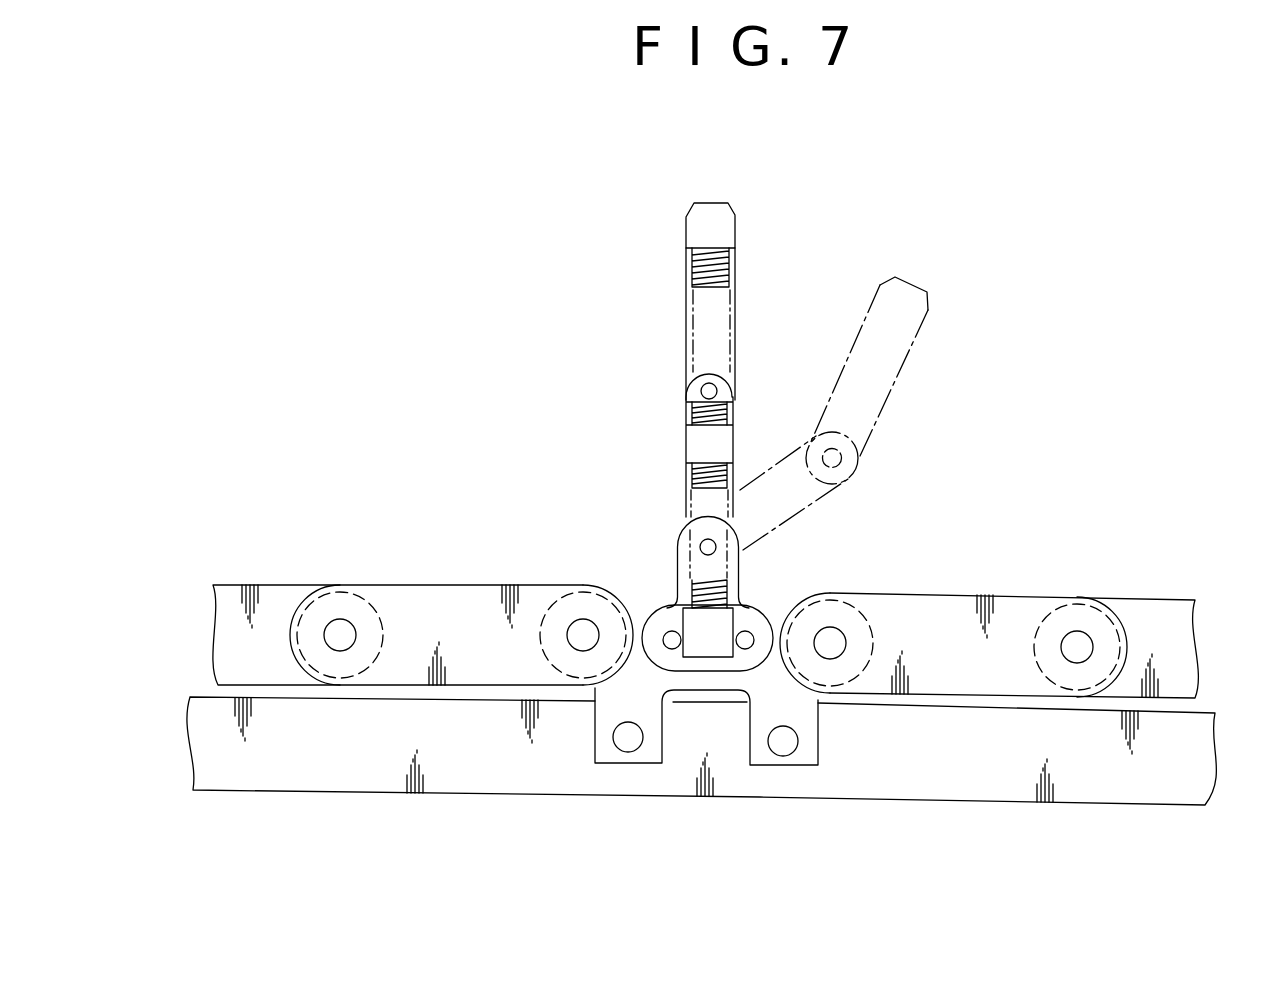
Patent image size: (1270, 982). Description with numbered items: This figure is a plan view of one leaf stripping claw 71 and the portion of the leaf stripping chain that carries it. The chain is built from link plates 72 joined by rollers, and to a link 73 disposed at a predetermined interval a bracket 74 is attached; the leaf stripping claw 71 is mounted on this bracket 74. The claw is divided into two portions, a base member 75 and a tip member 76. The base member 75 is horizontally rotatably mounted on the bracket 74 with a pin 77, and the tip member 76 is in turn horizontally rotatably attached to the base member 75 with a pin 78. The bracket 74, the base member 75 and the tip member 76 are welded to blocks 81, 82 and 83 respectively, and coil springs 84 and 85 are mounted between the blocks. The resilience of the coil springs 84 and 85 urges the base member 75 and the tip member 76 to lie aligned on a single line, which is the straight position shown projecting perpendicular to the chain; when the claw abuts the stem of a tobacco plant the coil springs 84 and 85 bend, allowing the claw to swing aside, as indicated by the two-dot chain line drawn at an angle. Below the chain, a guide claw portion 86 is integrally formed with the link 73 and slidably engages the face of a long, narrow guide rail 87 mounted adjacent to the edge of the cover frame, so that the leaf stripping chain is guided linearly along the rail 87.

The leaf stripping claw 71 is at (665, 386).
The link plate 72 is at (453, 597).
The link 73 is at (780, 602).
The bracket 74 is at (688, 583).
The base member 75 is at (695, 498).
The tip member 76 is at (687, 293).
The pin 77 is at (705, 545).
The pin 78 is at (705, 384).
The block 81 is at (712, 628).
The block 82 is at (723, 450).
The block 83 is at (725, 235).
The coil spring 84 is at (708, 465).
The coil spring 85 is at (722, 269).
The guide claw portion 86 is at (652, 755).
The guide rail 87 is at (1008, 793).